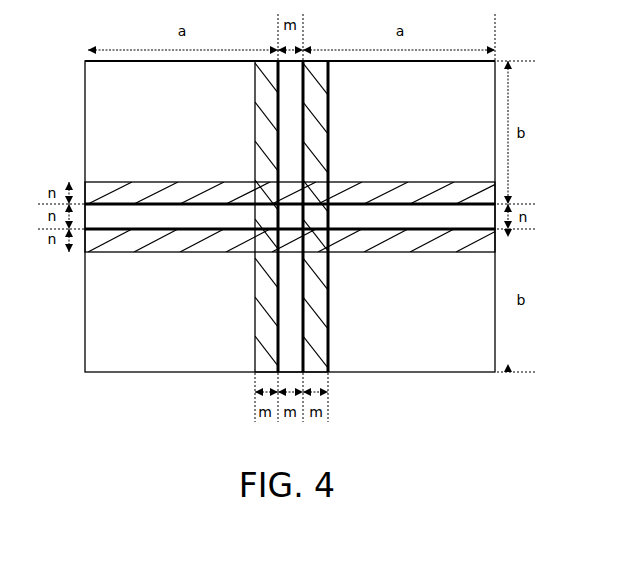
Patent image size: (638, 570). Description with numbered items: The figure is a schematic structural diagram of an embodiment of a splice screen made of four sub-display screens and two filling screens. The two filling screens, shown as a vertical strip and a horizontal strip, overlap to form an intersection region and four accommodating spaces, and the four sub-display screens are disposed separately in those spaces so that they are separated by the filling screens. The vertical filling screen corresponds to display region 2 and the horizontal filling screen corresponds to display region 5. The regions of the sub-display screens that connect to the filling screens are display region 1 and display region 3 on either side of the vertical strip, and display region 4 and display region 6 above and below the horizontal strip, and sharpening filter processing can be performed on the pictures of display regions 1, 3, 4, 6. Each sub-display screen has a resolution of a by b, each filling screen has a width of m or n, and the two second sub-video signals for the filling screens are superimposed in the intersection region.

The display region 1 is at (266, 216).
The display region 2 is at (290, 216).
The display region 3 is at (315, 216).
The display region 4 is at (292, 193).
The display region 5 is at (290, 216).
The display region 6 is at (292, 240).